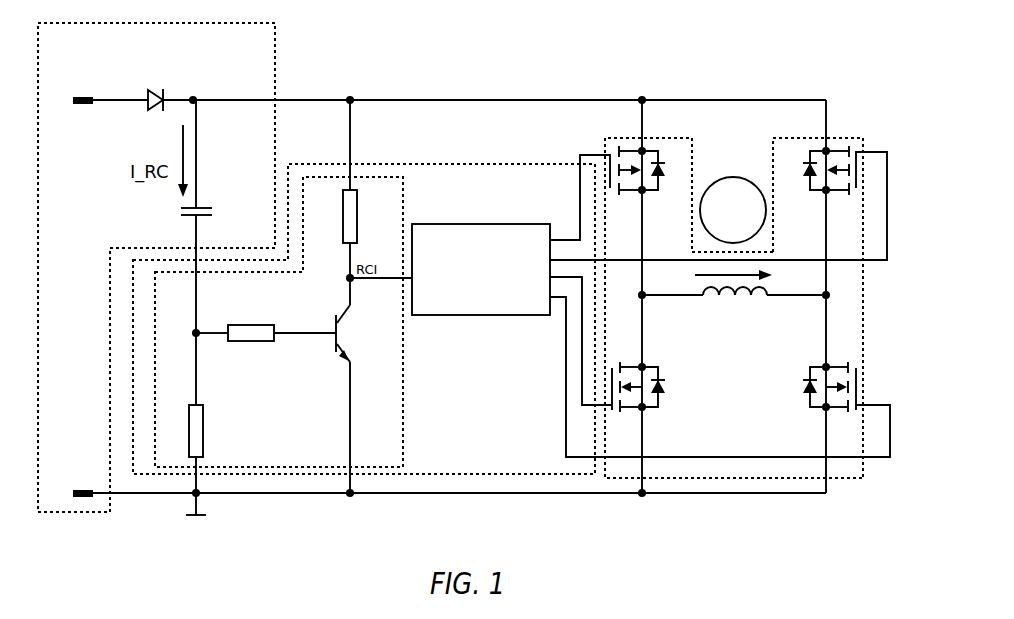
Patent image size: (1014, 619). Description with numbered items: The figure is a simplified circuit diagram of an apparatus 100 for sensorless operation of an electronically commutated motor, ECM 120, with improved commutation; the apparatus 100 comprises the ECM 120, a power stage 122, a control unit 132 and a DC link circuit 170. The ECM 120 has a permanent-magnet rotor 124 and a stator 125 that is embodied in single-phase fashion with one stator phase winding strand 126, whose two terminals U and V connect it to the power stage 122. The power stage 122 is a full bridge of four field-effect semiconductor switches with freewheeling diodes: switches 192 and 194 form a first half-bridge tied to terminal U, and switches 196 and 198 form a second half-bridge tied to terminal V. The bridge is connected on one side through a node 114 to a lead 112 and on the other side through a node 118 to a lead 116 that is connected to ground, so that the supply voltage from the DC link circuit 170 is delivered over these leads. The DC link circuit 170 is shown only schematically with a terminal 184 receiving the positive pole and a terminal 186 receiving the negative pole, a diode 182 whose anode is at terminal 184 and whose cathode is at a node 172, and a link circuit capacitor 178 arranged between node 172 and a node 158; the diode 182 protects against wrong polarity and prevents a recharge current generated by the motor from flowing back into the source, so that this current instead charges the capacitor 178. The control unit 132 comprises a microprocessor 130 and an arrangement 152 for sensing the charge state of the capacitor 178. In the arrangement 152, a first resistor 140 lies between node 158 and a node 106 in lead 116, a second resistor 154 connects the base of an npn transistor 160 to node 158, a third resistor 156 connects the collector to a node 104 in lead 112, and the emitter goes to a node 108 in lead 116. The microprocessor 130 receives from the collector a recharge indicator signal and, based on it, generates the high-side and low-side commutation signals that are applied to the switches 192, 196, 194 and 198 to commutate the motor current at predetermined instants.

The apparatus 100 is at (881, 33).
The node 104 is at (351, 98).
The node 106 is at (200, 498).
The node 108 is at (352, 498).
The lead 112 is at (497, 100).
The node 114 is at (638, 104).
The lead 116 is at (500, 497).
The node 118 is at (645, 497).
The electronically commutated motor 120 is at (737, 133).
The power stage 122 is at (891, 133).
The rotor 124 is at (746, 170).
The stator 125 is at (749, 304).
The stator phase winding strand 126 is at (703, 292).
The microprocessor 130 is at (539, 221).
The control unit 132 is at (533, 158).
The resistor 140 is at (207, 415).
The arrangement for sensing the charge state 152 is at (471, 383).
The resistor 154 is at (258, 342).
The resistor 156 is at (345, 236).
The node 158 is at (197, 330).
The npn transistor 160 is at (325, 354).
The DC link circuit 170 is at (276, 52).
The node 172 is at (196, 104).
The link circuit capacitor 178 is at (181, 215).
The diode 182 is at (152, 90).
The terminal 184 is at (78, 96).
The terminal 186 is at (85, 500).
The semiconductor switch 192 is at (650, 206).
The semiconductor switch 194 is at (653, 421).
The semiconductor switch 196 is at (813, 206).
The semiconductor switch 198 is at (821, 421).